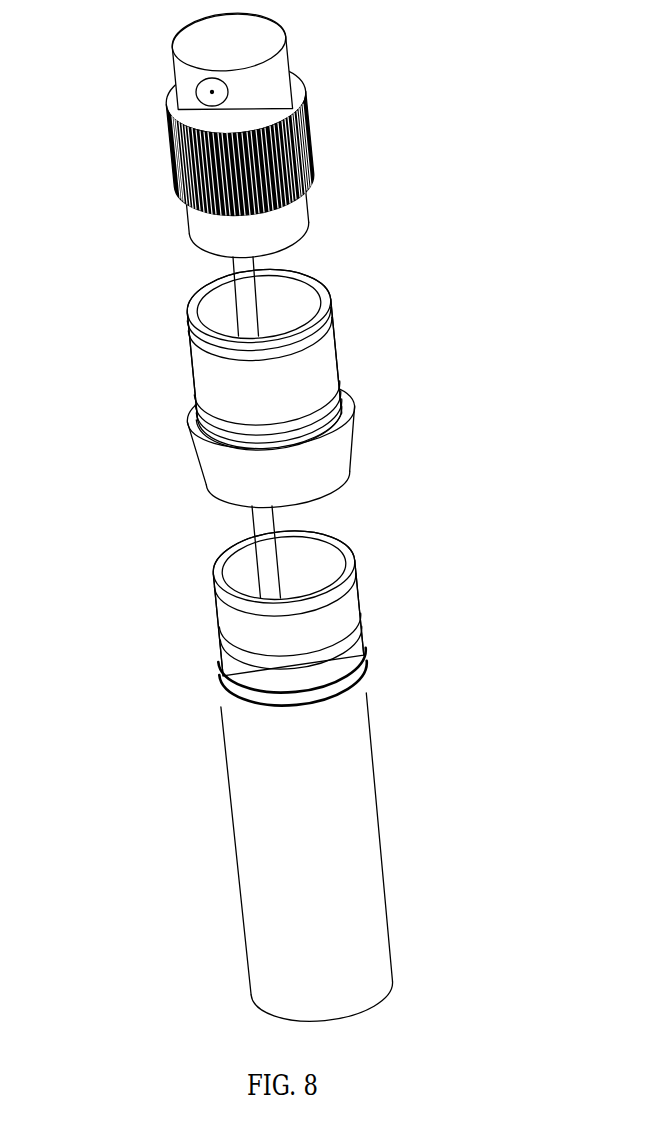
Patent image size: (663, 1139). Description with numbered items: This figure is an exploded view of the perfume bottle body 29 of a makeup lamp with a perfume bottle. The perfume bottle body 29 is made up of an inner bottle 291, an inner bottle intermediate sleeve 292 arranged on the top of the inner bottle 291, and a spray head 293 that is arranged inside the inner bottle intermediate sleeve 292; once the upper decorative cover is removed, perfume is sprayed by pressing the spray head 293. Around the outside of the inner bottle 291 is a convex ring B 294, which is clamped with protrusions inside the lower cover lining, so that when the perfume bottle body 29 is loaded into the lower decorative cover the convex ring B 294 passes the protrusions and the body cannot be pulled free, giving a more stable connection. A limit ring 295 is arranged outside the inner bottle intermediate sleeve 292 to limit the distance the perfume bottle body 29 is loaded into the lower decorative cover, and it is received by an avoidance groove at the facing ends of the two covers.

The perfume bottle body 29 is at (225, 728).
The inner bottle 291 is at (295, 802).
The inner bottle intermediate sleeve 292 is at (250, 402).
The spray head 293 is at (247, 108).
The convex ring B 294 is at (358, 678).
The limit ring 295 is at (243, 458).